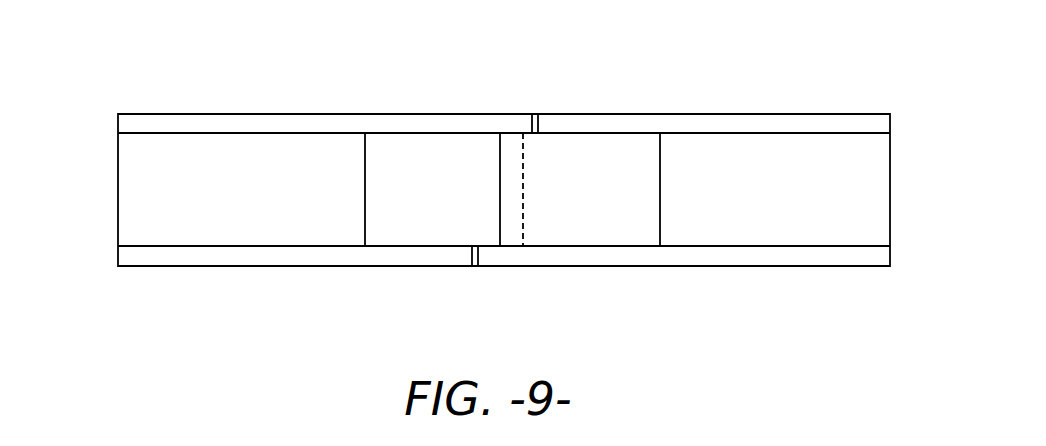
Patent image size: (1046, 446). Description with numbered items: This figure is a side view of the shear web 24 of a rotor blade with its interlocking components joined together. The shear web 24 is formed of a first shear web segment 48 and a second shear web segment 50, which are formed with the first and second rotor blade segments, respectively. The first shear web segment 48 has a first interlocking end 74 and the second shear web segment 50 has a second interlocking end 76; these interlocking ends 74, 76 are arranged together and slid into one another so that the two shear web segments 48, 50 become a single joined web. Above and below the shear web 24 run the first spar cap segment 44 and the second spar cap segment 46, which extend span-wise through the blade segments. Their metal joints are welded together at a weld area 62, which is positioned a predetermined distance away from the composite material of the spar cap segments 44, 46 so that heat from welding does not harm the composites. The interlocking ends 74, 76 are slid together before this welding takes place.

The shear web 24 is at (100, 150).
The first spar cap segment 44 is at (260, 128).
The second spar cap segment 46 is at (700, 118).
The first shear web segment 48 is at (140, 205).
The second shear web segment 50 is at (867, 204).
The weld area 62 is at (537, 106).
The first interlocking end 74 is at (499, 164).
The second interlocking end 76 is at (510, 210).